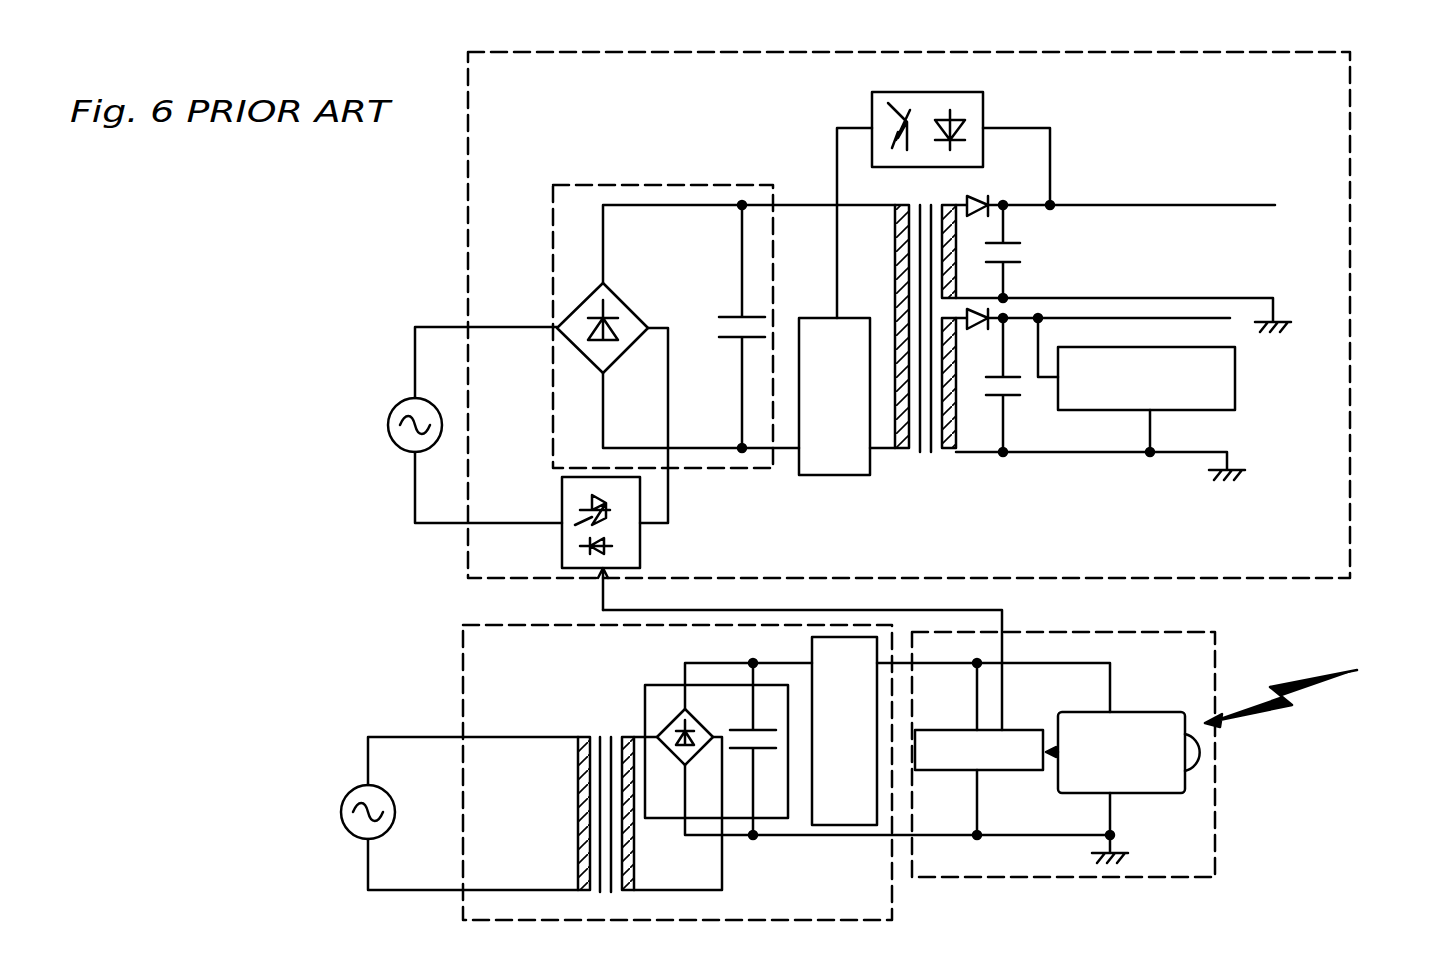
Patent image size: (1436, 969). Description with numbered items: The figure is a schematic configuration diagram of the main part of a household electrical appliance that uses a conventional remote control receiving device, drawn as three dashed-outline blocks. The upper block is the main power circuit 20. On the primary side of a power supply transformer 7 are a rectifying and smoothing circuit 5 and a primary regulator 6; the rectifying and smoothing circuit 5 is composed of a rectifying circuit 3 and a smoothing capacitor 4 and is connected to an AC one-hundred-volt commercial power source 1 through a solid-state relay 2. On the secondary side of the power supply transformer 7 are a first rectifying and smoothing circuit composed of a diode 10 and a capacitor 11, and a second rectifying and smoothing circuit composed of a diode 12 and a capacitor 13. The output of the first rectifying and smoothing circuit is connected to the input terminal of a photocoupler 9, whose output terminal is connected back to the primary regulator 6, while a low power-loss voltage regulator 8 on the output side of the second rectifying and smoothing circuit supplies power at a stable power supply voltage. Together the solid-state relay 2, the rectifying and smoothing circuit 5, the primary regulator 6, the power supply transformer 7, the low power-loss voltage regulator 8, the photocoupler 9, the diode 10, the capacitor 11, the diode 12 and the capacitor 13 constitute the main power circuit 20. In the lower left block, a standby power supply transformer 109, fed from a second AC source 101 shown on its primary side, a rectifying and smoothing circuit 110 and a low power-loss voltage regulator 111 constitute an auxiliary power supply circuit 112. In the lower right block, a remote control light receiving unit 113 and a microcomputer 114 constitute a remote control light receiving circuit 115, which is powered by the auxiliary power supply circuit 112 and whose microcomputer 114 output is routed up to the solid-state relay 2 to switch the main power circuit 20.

The commercial power source 1 is at (398, 407).
The solid-state relay 2 is at (562, 542).
The rectifying circuit 3 is at (586, 301).
The smoothing capacitor 4 is at (720, 328).
The rectifying and smoothing circuit 5 is at (650, 185).
The primary regulator 6 is at (830, 475).
The power supply transformer 7 is at (925, 452).
The low power-loss voltage regulator 8 is at (1235, 382).
The photocoupler 9 is at (983, 103).
The diode 10 is at (975, 203).
The capacitor 11 is at (1022, 254).
The diode 12 is at (975, 330).
The capacitor 13 is at (1020, 386).
The main power circuit 20 is at (1350, 497).
The AC power source 101 is at (348, 793).
The standby power supply transformer 109 is at (605, 893).
The rectifying and smoothing circuit 110 is at (772, 749).
The low power-loss voltage regulator 111 is at (812, 650).
The auxiliary power supply circuit 112 is at (892, 897).
The remote control light receiving unit 113 is at (1162, 695).
The microcomputer 114 is at (995, 770).
The remote control light receiving circuit 115 is at (1215, 845).